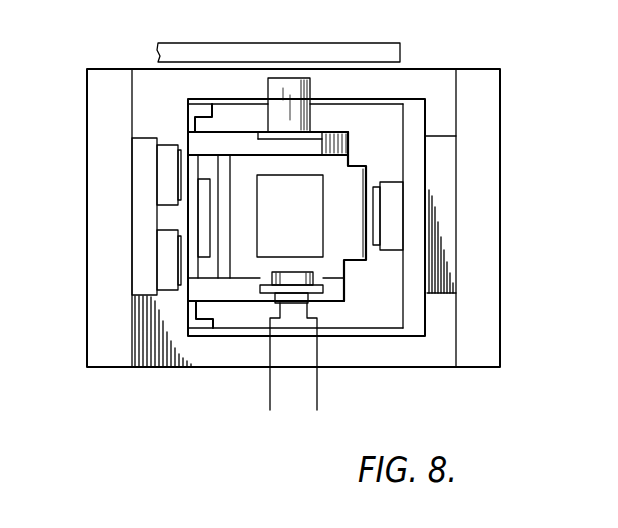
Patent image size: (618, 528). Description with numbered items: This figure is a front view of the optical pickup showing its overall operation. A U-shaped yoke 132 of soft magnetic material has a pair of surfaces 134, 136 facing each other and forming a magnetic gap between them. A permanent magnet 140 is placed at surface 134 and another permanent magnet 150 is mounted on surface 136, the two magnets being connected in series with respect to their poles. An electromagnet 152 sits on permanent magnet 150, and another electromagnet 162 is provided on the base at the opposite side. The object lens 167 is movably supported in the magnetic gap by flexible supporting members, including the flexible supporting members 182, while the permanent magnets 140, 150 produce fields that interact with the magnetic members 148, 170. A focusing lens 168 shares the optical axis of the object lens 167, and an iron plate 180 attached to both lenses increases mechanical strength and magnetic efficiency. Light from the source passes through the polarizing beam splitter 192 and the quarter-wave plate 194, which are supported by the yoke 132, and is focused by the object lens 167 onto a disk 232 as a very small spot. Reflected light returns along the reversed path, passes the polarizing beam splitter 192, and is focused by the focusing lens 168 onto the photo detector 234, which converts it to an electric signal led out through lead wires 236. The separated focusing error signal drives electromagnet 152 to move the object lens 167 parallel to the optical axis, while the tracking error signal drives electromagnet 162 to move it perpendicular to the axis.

The U-shaped yoke 132 is at (486, 100).
The surface of yoke 134 is at (462, 345).
The surface of yoke 136 is at (133, 338).
The permanent magnet 140 is at (448, 218).
The magnetic member 148 is at (205, 188).
The permanent magnet 150 is at (142, 213).
The electromagnet 152 is at (162, 262).
The electromagnet 162 is at (390, 252).
The object lens 167 is at (281, 90).
The focusing lens 168 is at (297, 273).
The magnetic member 170 is at (367, 178).
The iron plate 180 is at (225, 272).
The flexible supporting members 182 is at (250, 313).
The polarizing beam splitter 192 is at (309, 217).
The quarter-wave plate 194 is at (258, 175).
The disk 232 is at (346, 44).
The photo detector 234 is at (280, 305).
The lead wires 236 is at (272, 382).